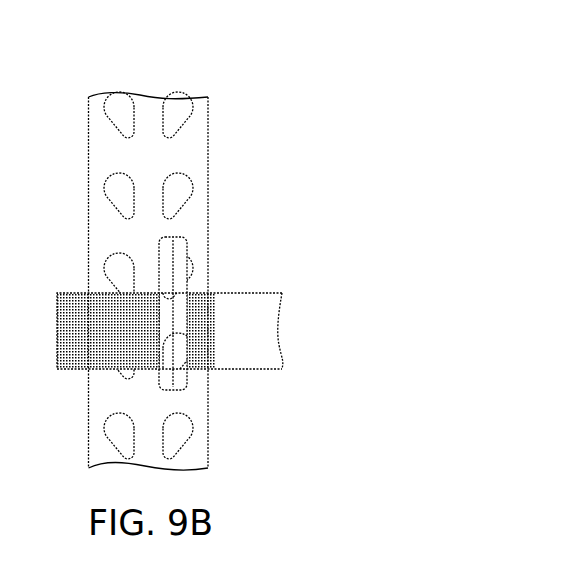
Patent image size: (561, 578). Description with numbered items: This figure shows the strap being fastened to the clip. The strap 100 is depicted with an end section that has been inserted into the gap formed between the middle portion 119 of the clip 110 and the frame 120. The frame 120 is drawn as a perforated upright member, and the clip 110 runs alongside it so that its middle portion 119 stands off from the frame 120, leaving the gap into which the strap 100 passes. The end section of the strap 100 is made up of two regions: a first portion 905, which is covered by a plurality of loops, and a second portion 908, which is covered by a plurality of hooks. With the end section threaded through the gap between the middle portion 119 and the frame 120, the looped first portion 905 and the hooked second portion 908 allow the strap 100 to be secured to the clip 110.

The frame 120 is at (192, 153).
The clip 110 is at (181, 260).
The middle portion 119 is at (180, 320).
The strap 100 is at (265, 339).
The first portion 905 is at (200, 350).
The second portion 908 is at (77, 352).